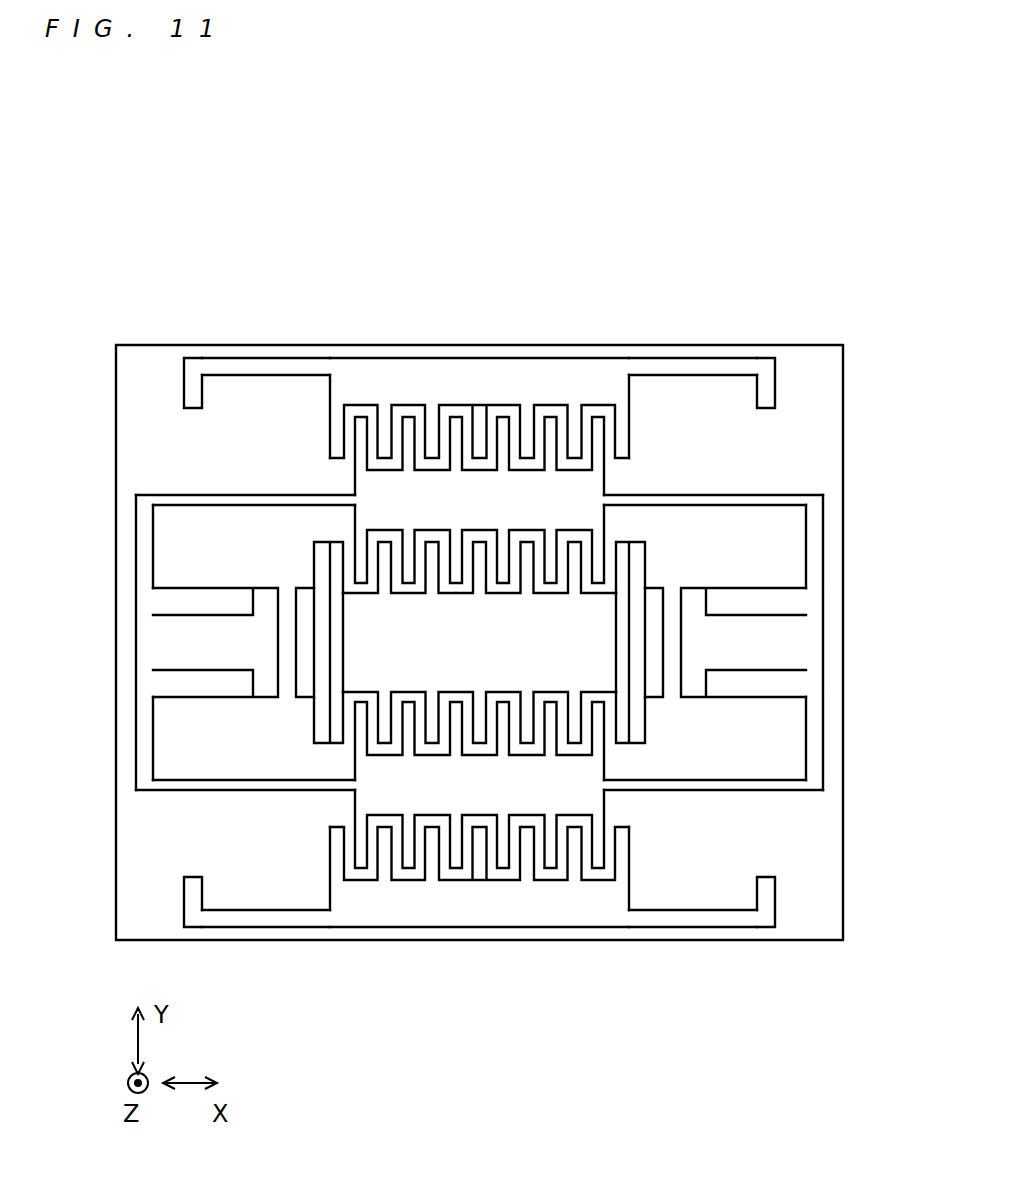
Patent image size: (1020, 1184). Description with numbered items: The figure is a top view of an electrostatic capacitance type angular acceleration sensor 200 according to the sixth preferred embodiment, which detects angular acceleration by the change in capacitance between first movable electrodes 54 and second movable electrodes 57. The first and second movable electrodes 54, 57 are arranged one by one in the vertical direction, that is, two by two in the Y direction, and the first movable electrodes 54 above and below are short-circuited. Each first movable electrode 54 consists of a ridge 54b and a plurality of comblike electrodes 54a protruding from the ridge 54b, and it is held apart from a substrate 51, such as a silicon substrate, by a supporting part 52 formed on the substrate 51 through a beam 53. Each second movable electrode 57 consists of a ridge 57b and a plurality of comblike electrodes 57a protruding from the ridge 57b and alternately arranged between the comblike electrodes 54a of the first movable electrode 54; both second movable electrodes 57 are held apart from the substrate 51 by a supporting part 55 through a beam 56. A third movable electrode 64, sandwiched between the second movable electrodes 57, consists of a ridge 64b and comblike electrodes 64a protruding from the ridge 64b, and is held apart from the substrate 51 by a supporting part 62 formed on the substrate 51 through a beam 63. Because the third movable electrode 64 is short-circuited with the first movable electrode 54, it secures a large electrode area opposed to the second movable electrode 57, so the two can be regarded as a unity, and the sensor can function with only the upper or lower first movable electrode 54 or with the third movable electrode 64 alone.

The electrostatic capacitance type angular acceleration sensor 200 is at (552, 217).
The substrate 51 is at (818, 357).
The supporting part 52 is at (768, 918).
The beam 53 is at (703, 915).
The first movable electrode 54 is at (479, 647).
The comblike electrodes 54a is at (440, 855).
The ridge 54b is at (507, 915).
The supporting part 55 is at (695, 685).
The beam 56 is at (779, 500).
The second movable electrode 57 is at (479, 642).
The comblike electrodes 57a is at (445, 748).
The ridge 57b is at (367, 820).
The supporting part 62 is at (652, 685).
The beam 63 is at (637, 744).
The third movable electrode 64 is at (557, 633).
The comblike electrodes 64a is at (573, 553).
The ridge 64b is at (603, 617).